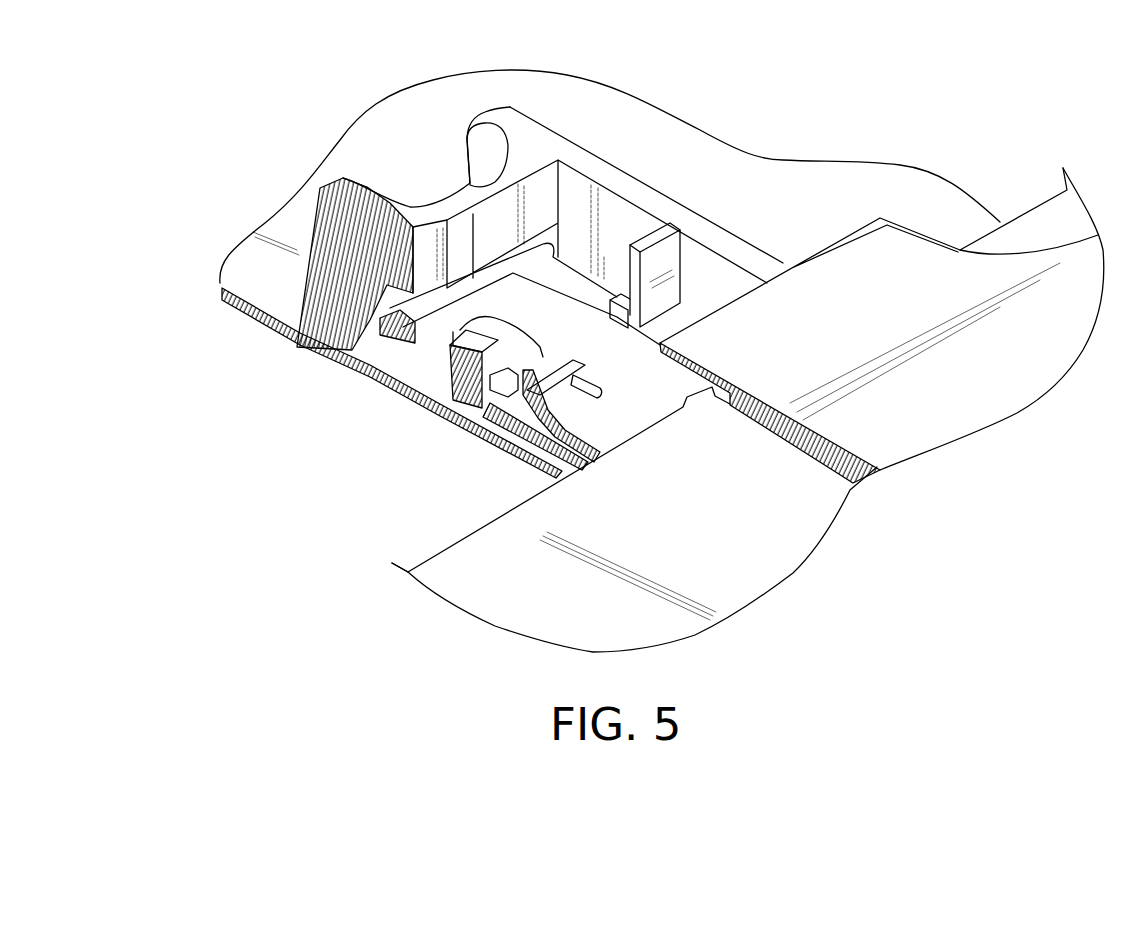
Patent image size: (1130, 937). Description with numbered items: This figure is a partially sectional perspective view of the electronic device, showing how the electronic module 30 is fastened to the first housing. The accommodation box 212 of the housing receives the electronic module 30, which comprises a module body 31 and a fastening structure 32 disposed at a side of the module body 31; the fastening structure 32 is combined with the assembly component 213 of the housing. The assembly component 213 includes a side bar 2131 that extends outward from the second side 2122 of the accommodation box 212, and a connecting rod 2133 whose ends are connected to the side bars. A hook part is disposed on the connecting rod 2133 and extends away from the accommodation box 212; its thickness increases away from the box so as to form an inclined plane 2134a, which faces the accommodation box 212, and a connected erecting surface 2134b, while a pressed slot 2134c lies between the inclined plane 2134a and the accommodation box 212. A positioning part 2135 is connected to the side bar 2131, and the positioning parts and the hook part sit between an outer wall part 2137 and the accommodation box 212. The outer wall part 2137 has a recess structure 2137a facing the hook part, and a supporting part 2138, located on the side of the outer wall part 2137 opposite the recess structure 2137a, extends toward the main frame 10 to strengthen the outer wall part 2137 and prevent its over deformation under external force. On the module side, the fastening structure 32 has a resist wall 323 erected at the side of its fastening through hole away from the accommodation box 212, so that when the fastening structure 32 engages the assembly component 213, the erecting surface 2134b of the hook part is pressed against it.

The main frame 10 is at (236, 317).
The electronic module 30 is at (420, 628).
The module body 31 is at (673, 567).
The fastening structure 32 is at (386, 360).
The resist wall 323 is at (453, 332).
The accommodation box 212 is at (1022, 427).
The second side 2122 is at (843, 235).
The assembly component 213 is at (517, 97).
The side bar 2131 is at (610, 177).
The connecting rod 2133 is at (570, 463).
The inclined plane 2134a is at (460, 380).
The erecting surface 2134b is at (447, 372).
The pressed slot 2134c is at (513, 390).
The positioning part 2135 is at (650, 260).
The outer wall part 2137 is at (443, 320).
The recess structure 2137a is at (427, 240).
The supporting part 2138 is at (367, 180).